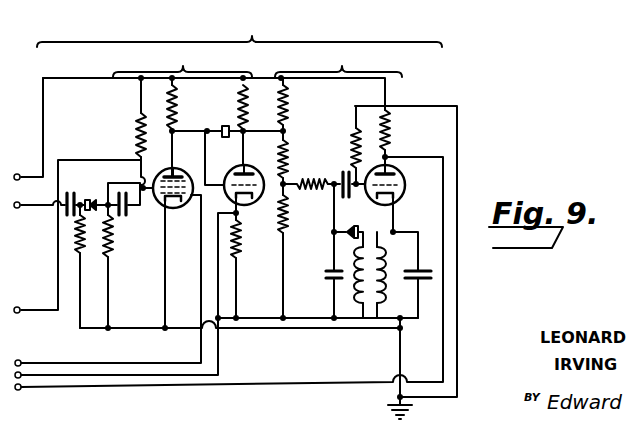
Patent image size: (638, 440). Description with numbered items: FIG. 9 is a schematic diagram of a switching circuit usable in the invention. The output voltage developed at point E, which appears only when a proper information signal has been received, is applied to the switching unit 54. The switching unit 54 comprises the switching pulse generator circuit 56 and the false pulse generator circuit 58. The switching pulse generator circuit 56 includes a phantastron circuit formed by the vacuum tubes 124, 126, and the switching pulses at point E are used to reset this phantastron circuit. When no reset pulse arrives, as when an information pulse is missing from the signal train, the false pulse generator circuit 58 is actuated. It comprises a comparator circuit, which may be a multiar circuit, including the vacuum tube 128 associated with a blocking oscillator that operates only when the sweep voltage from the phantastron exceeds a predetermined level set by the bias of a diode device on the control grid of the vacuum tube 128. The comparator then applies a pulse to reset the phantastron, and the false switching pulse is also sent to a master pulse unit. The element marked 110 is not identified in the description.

The switching unit 54 is at (239, 30).
The switching pulse generator circuit 56 is at (182, 60).
The false pulse generator circuit 58 is at (338, 60).
The vacuum tube 124 is at (161, 203).
The vacuum tube 126 is at (242, 164).
The vacuum tube 128 is at (413, 173).
The detector element 110 is at (353, 210).